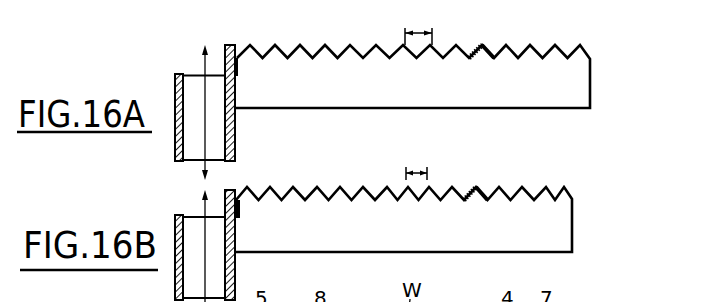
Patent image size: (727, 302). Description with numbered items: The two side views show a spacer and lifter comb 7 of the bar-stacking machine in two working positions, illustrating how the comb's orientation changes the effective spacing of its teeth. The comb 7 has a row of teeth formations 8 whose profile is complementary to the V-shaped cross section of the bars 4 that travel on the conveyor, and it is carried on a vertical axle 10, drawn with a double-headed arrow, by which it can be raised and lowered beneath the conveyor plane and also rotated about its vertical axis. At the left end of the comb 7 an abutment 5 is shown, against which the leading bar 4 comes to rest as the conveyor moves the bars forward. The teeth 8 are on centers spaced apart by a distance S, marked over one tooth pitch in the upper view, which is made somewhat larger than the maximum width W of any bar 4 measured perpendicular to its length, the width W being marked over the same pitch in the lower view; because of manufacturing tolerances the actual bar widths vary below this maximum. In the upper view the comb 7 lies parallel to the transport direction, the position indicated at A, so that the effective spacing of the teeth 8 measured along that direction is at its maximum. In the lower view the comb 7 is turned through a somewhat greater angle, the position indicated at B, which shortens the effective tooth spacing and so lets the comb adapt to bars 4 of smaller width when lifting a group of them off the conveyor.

In FIG. 16A, the V-section bar 4 is at (482, 45).
In FIG. 16B, the V-section bar 4 is at (475, 185).
In FIG. 16A, the abutment 5 is at (227, 44).
In FIG. 16B, the abutment 5 is at (232, 187).
In FIG. 16A, the spacer and lifter comb 7 is at (552, 72).
In FIG. 16B, the spacer and lifter comb 7 is at (537, 208).
In FIG. 16A, the teeth formations 8 is at (250, 47).
In FIG. 16B, the teeth formations 8 is at (297, 187).
In FIG. 16A, the vertical axle 10 is at (202, 65).
In FIG. 16B, the vertical axle 10 is at (200, 246).
In FIG. 16A, the tooth center spacing S is at (413, 33).
In FIG. 16B, the maximum bar width W is at (413, 167).
In FIG. 16A, the comb position parallel to transport direction A is at (598, 78).
In FIG. 16B, the comb position at increased angle B is at (578, 229).